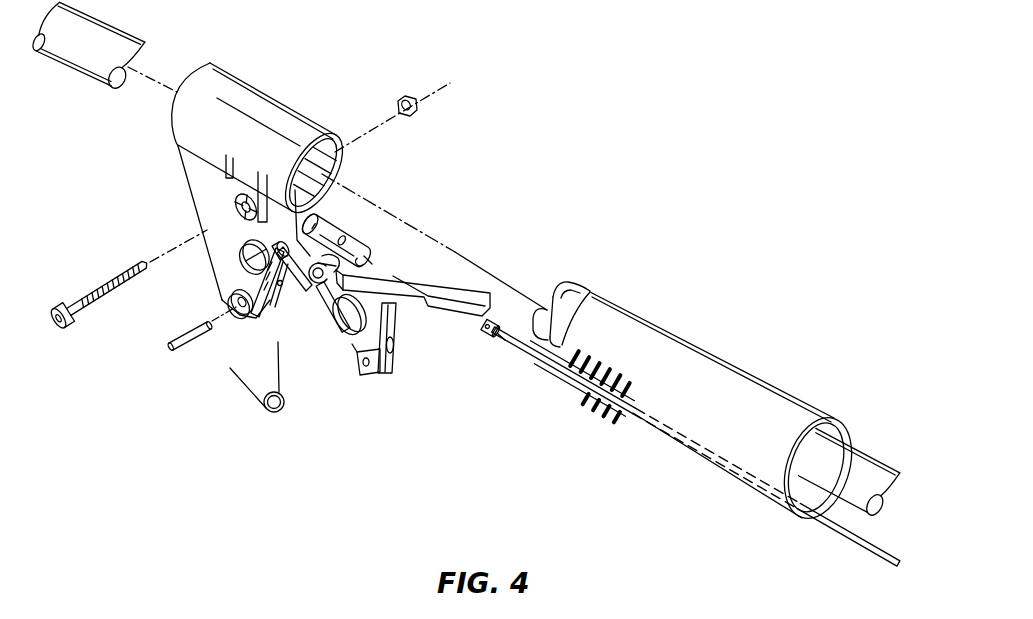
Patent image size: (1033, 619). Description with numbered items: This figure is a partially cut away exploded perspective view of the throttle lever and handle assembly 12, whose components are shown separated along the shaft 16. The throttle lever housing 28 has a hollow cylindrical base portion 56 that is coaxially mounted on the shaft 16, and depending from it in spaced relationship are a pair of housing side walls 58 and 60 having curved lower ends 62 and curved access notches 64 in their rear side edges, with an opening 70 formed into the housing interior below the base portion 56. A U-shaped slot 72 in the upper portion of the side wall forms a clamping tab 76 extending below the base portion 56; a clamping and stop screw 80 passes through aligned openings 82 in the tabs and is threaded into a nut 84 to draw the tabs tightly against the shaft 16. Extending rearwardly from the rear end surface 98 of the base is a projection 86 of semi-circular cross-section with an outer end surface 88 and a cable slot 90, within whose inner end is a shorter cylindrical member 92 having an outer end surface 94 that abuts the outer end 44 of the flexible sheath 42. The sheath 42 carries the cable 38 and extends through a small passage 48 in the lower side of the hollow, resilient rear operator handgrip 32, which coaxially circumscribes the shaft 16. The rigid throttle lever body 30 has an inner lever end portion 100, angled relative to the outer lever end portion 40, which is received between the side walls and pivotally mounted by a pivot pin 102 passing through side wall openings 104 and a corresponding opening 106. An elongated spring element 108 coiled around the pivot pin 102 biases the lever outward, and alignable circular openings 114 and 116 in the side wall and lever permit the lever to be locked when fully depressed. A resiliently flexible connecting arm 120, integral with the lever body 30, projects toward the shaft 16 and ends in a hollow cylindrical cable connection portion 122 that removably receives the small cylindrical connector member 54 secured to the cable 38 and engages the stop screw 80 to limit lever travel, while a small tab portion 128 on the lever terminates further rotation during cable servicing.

The throttle lever and handle assembly 12 is at (465, 285).
The shaft 16 is at (132, 13).
The throttle lever housing 28 is at (327, 79).
The throttle lever body 30 is at (386, 384).
The rear operator handgrip 32 is at (711, 336).
The cable 38 is at (505, 345).
The outer lever end portion 40 is at (436, 316).
The flexible sheath 42 is at (572, 383).
The outer end of sheath 44 is at (520, 342).
The passage 48 is at (604, 412).
The cylindrical connector member 54 is at (490, 338).
The base portion 56 is at (233, 80).
The housing side wall 58 is at (213, 265).
The housing side wall 60 is at (278, 302).
The curved lower ends 62 is at (258, 322).
The access notches 64 is at (279, 246).
The opening 70 is at (272, 305).
The U-shaped slot 72 is at (226, 155).
The clamping tab 76 is at (256, 185).
The clamping and stop screw 80 is at (128, 265).
The openings in clamping tabs 82 is at (237, 205).
The nut 84 is at (418, 112).
The projection 86 is at (366, 258).
The outer end surface of projection 88 is at (338, 258).
The cable slot 90 is at (370, 262).
The cylindrical member 92 is at (326, 226).
The outer end surface of cylindrical member 94 is at (345, 236).
The rear end surface of base portion 98 is at (338, 196).
The inner lever end portion 100 is at (388, 333).
The pivot pin 102 is at (184, 329).
The openings in side walls 104 is at (231, 298).
The opening in inner lever end portion 106 is at (364, 372).
The spring element 108 is at (262, 410).
The circular opening in side wall 114 is at (243, 252).
The circular opening in lever 116 is at (358, 356).
The flexible connecting arm 120 is at (327, 330).
The cable connection portion 122 is at (336, 266).
The tab portion 128 is at (391, 352).